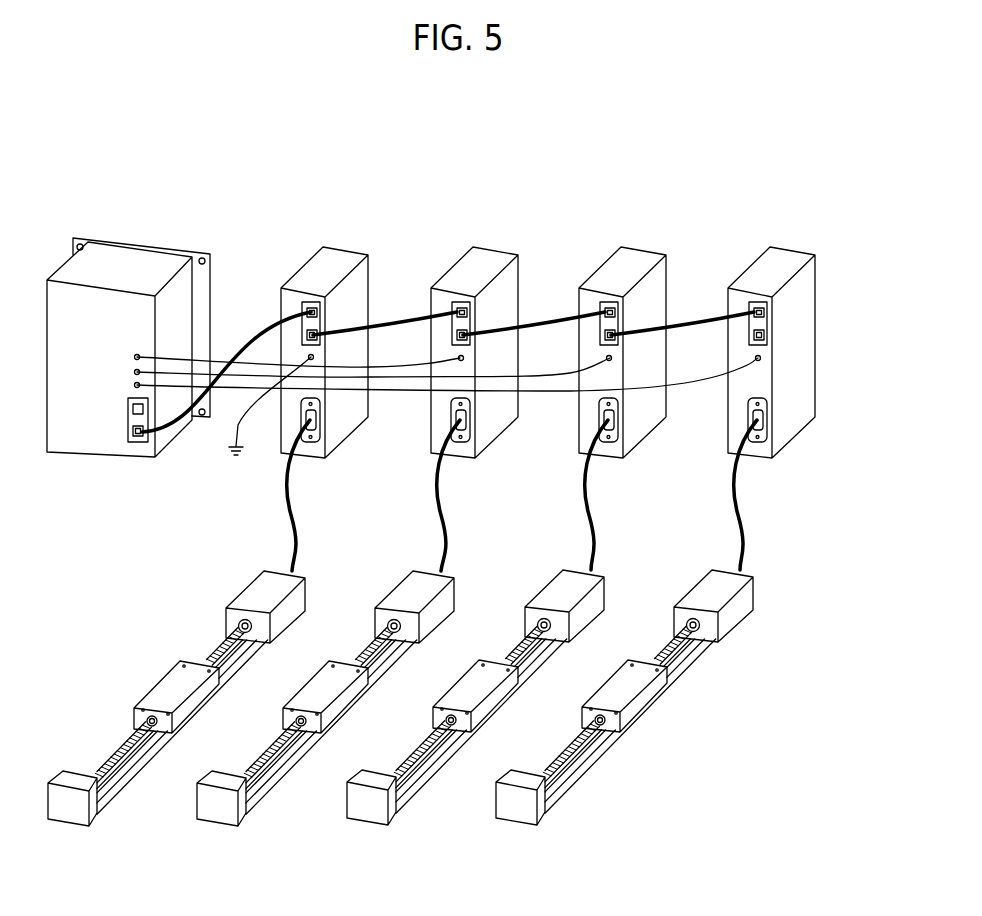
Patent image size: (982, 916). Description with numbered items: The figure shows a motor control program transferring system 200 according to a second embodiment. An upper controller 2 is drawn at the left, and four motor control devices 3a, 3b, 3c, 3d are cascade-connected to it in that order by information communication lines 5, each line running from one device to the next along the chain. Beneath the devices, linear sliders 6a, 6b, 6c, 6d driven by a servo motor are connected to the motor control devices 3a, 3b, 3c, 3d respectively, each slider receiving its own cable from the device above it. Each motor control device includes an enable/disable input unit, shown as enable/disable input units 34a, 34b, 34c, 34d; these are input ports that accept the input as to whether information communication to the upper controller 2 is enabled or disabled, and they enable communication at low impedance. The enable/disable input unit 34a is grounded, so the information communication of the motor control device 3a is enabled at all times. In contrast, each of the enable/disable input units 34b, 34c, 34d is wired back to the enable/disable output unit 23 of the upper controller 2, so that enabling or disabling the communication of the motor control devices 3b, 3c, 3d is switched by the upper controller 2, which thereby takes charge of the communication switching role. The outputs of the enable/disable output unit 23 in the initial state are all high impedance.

The upper controller 2 is at (140, 248).
The enable/disable output unit 23 is at (126, 355).
The motor control device 3a is at (336, 246).
The motor control device 3b is at (486, 246).
The motor control device 3c is at (634, 246).
The motor control device 3d is at (784, 246).
The enable/disable input unit 34a is at (316, 356).
The enable/disable input unit 34b is at (466, 357).
The enable/disable input unit 34c is at (614, 357).
The enable/disable input unit 34d is at (763, 357).
The information communication line 5 is at (257, 328).
The linear slider 6a is at (67, 823).
The linear slider 6b is at (216, 823).
The linear slider 6c is at (366, 822).
The linear slider 6d is at (515, 822).
The motor control program transferring system 200 is at (648, 855).